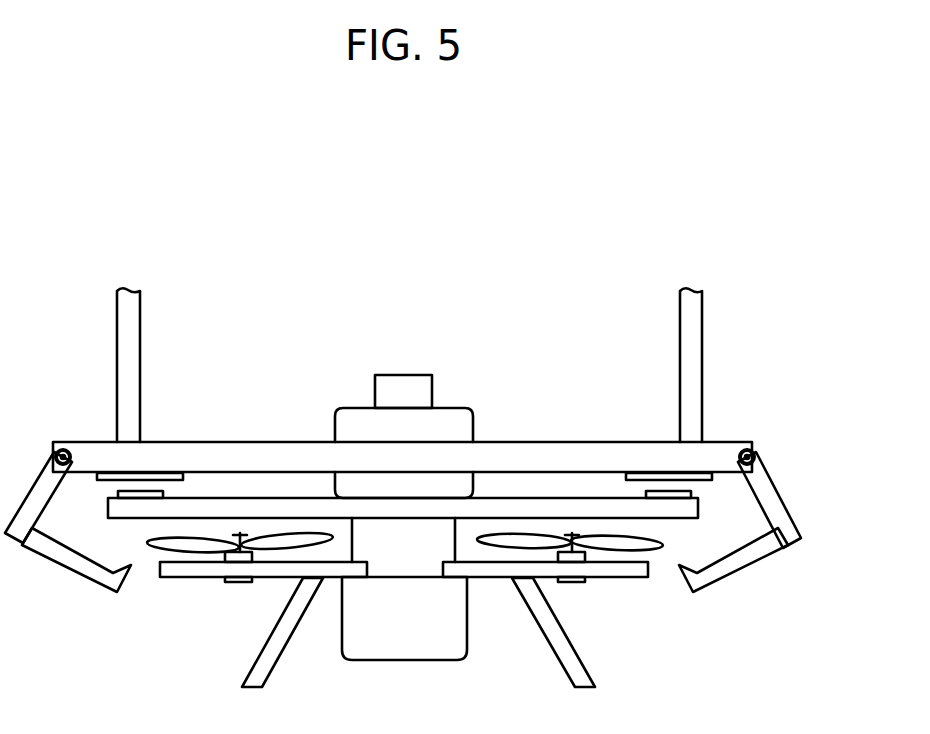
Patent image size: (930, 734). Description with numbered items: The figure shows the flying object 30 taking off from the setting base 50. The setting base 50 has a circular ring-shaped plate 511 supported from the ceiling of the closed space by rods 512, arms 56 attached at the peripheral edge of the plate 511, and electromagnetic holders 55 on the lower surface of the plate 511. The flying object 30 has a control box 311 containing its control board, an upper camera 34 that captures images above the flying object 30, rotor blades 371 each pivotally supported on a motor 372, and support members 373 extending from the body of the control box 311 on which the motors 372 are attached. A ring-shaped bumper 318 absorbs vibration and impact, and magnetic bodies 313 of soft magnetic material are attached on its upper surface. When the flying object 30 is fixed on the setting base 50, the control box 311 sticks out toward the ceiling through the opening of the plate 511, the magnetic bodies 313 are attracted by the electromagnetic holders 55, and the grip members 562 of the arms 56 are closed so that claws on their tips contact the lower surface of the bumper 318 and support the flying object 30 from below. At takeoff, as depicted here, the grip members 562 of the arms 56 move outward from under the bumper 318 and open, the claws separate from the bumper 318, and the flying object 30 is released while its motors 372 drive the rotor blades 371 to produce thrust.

The flying object 30 is at (407, 526).
The control box 311 is at (335, 423).
The magnetic body 313 is at (130, 566).
The ring-shaped bumper 318 is at (438, 510).
The upper camera 34 is at (412, 382).
The rotor blade 371 is at (655, 550).
The motor 372 is at (573, 582).
The support member 373 is at (218, 570).
The setting base 50 is at (422, 463).
The plate 511 is at (548, 458).
The rod 512 is at (690, 370).
The electromagnetic holder 55 is at (153, 478).
The arm 56 is at (795, 511).
The grip member 562 is at (753, 555).